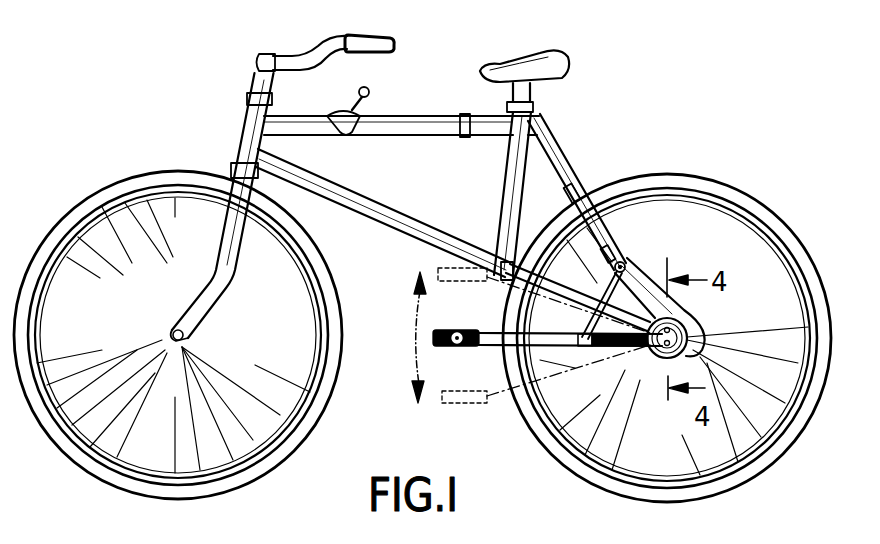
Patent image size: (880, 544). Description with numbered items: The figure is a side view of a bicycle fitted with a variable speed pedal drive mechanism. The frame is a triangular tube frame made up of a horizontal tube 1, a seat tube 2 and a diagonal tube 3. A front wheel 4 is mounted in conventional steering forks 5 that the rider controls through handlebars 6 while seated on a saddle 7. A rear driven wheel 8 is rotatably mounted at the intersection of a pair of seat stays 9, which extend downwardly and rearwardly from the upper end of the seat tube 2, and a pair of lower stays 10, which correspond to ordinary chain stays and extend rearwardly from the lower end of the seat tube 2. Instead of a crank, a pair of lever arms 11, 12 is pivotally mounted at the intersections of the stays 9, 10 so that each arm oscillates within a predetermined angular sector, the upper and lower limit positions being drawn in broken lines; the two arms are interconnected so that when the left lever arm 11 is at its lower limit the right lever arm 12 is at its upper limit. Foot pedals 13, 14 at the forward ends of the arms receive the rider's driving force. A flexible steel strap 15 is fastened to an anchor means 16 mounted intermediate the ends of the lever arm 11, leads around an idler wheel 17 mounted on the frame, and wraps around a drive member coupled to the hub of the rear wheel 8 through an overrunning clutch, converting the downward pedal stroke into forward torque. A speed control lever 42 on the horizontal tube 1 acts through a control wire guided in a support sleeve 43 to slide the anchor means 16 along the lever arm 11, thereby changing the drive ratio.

The horizontal tube 1 is at (303, 116).
The seat tube 2 is at (505, 160).
The diagonal tube 3 is at (350, 198).
The front wheel 4 is at (88, 203).
The steering forks 5 is at (222, 233).
The handlebars 6 is at (303, 56).
The saddle 7 is at (545, 62).
The rear driven wheel 8 is at (780, 225).
The seat stays 9 is at (557, 175).
The lower stays 10 is at (540, 270).
The lever arm 11 is at (547, 346).
The lever arm 12 is at (492, 289).
The foot pedal 13 is at (440, 346).
The foot pedal 14 is at (440, 272).
The steel strap 15 is at (586, 321).
The anchor means 16 is at (597, 348).
The idler wheel 17 is at (625, 252).
The speed control lever 42 is at (371, 100).
The support sleeve 43 is at (652, 262).